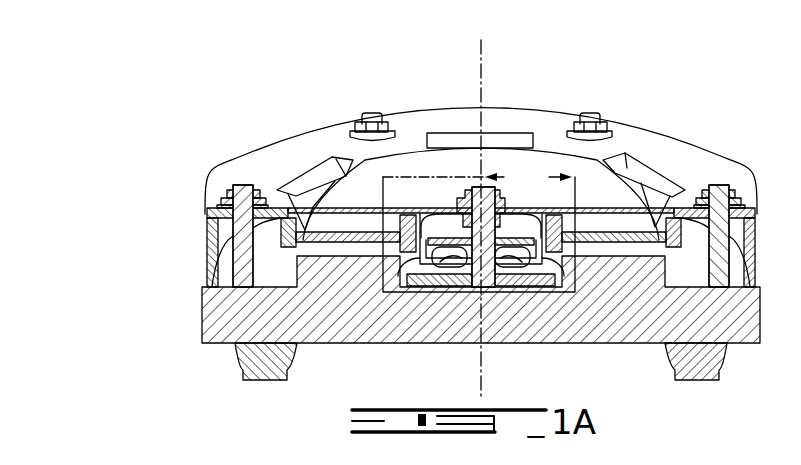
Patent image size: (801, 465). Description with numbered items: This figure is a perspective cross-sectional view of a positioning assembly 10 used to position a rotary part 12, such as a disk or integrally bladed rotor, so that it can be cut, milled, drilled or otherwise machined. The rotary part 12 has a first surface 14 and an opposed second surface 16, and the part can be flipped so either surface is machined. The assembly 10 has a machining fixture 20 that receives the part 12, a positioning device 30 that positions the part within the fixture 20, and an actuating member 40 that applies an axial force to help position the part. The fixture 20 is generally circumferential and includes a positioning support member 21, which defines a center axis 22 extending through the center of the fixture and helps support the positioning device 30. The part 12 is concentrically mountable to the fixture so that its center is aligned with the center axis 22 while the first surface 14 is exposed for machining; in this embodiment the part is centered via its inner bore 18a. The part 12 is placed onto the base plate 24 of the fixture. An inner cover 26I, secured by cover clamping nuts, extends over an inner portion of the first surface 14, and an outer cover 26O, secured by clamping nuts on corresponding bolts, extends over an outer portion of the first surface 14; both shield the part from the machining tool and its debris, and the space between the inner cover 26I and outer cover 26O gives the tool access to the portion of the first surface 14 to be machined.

The positioning assembly 10 is at (253, 130).
The rotary part 12 is at (328, 243).
The first surface 14 is at (620, 225).
The second surface 16 is at (607, 238).
The inner bore 18a is at (427, 210).
The machining fixture 20 is at (750, 372).
The positioning support member 21 is at (475, 288).
The center axis 22 is at (478, 58).
The base plate 24 is at (577, 320).
The inner cover 26I is at (598, 222).
The outer cover 26O is at (692, 212).
The positioning device 30 is at (522, 282).
The actuating member 40 is at (490, 211).